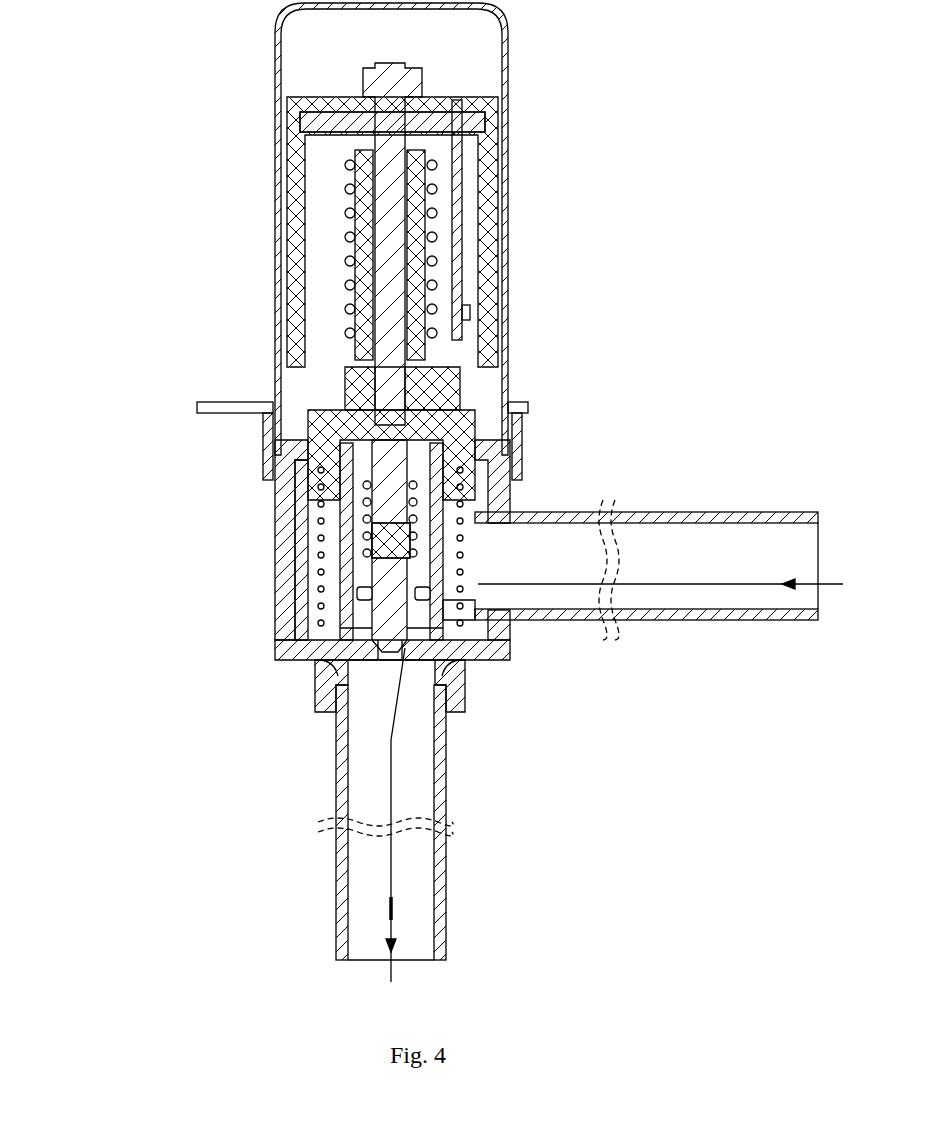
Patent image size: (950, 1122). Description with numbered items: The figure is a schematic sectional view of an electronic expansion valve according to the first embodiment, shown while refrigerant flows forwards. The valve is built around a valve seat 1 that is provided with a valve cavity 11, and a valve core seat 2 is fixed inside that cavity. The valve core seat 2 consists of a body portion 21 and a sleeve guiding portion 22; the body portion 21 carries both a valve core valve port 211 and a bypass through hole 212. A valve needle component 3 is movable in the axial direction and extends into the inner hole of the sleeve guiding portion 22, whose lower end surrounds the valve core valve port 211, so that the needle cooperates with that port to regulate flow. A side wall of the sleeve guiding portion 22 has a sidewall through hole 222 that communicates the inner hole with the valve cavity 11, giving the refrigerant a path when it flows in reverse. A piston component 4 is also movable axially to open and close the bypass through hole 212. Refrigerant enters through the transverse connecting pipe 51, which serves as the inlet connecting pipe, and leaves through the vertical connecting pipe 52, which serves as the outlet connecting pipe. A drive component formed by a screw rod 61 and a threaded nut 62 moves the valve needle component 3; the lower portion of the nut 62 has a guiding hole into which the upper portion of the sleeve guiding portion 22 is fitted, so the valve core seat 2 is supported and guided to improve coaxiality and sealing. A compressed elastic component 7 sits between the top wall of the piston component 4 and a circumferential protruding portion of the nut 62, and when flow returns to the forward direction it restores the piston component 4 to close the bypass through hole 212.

The valve seat 1 is at (295, 545).
The valve cavity 11 is at (303, 513).
The valve core seat 2 is at (665, 655).
The body portion 21 is at (458, 632).
The valve core valve port 211 is at (332, 652).
The bypass through hole 212 is at (328, 622).
The sleeve guiding portion 22 is at (480, 617).
The sidewall through hole 222 is at (340, 597).
The valve needle component 3 is at (408, 650).
The piston component 4 is at (320, 610).
The transverse connecting pipe 51 is at (638, 513).
The vertical connecting pipe 52 is at (447, 793).
The screw rod 61 is at (387, 422).
The nut 62 is at (292, 462).
The elastic component 7 is at (322, 563).